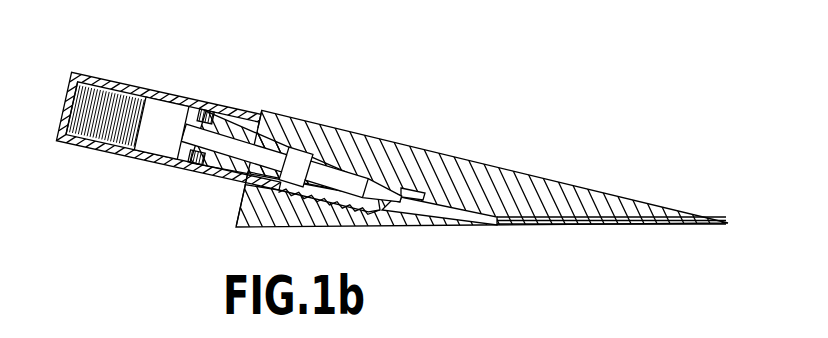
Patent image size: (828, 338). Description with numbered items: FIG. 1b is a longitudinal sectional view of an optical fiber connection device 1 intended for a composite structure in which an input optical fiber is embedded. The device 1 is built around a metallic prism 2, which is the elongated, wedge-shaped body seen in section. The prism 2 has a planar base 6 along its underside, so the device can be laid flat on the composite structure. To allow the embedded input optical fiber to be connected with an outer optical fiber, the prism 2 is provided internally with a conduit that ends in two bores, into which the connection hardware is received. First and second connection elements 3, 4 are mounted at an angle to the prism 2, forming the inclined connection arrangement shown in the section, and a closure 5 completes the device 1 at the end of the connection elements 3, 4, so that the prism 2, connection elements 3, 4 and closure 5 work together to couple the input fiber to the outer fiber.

The optical fiber connection device 1 is at (382, 150).
The metallic prism 2 is at (482, 172).
The first connection element 3 is at (348, 162).
The second connection element 4 is at (198, 107).
The closure 5 is at (108, 80).
The planar base 6 is at (430, 227).